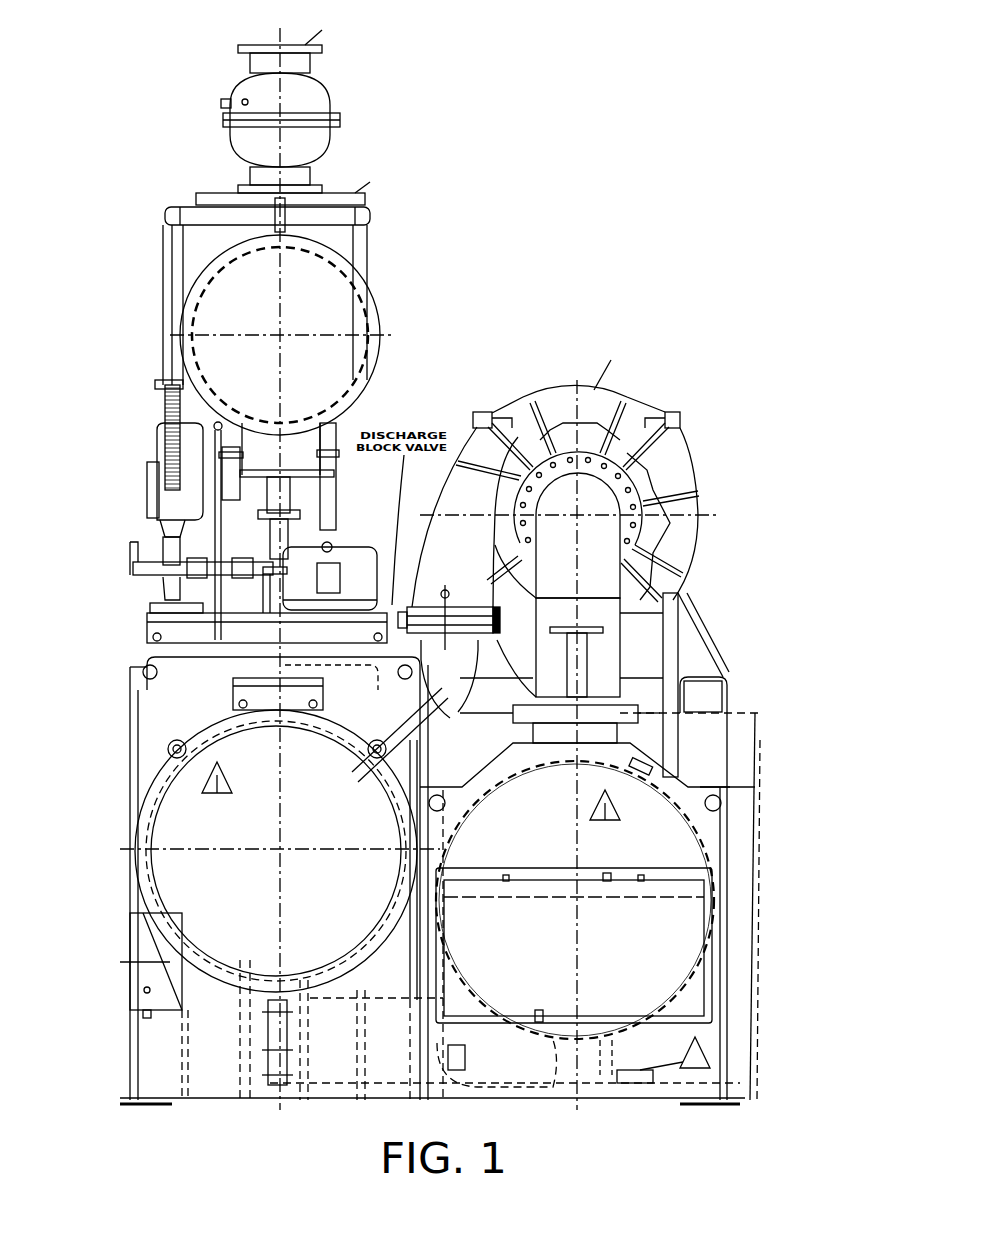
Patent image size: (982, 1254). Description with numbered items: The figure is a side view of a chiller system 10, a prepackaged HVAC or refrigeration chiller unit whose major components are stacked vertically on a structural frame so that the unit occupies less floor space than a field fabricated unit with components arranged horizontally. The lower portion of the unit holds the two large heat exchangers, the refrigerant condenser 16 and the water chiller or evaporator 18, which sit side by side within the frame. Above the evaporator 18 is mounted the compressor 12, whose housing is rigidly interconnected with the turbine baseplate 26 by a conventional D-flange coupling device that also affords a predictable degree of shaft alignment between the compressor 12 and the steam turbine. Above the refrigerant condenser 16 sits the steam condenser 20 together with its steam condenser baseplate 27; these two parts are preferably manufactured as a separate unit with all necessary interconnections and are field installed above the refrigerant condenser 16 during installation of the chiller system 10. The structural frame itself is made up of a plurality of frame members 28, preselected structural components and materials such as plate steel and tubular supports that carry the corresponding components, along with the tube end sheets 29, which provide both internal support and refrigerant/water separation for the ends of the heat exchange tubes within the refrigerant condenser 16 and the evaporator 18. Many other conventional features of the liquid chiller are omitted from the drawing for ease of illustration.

The chiller system 10 is at (760, 268).
The compressor 12 is at (700, 503).
The refrigerant condenser 16 is at (150, 800).
The evaporator 18 is at (667, 928).
The steam condenser 20 is at (363, 308).
The turbine baseplate 26 is at (693, 647).
The steam condenser baseplate 27 is at (160, 623).
The frame members 28 is at (667, 678).
The tube end sheets 29 is at (148, 700).